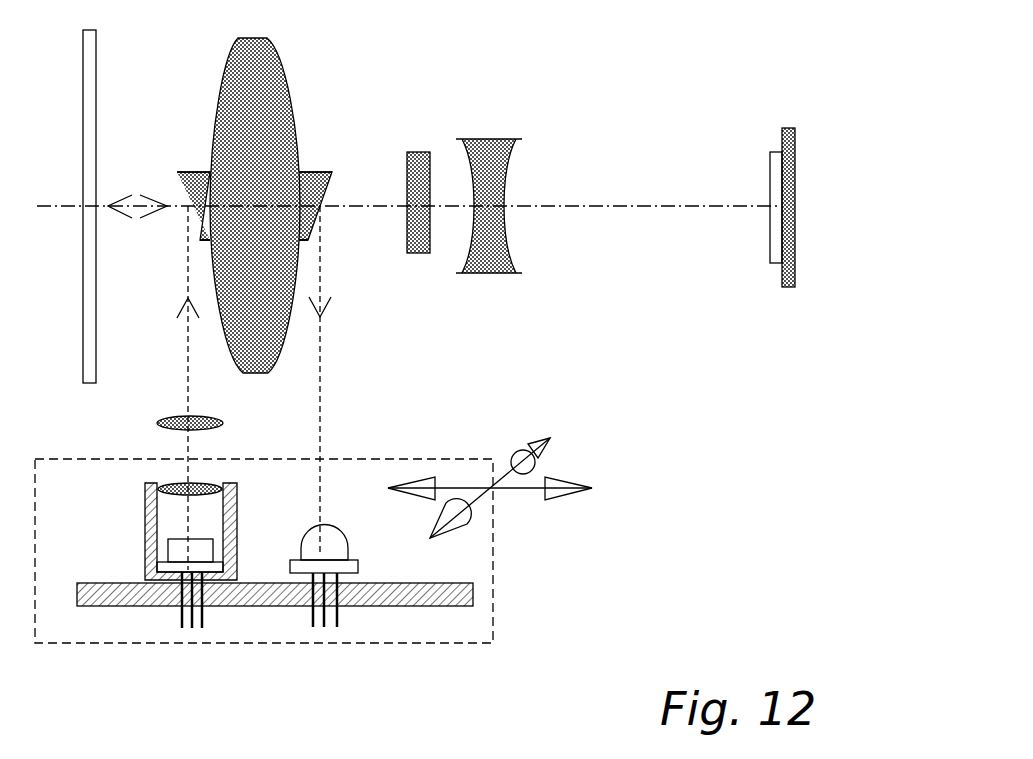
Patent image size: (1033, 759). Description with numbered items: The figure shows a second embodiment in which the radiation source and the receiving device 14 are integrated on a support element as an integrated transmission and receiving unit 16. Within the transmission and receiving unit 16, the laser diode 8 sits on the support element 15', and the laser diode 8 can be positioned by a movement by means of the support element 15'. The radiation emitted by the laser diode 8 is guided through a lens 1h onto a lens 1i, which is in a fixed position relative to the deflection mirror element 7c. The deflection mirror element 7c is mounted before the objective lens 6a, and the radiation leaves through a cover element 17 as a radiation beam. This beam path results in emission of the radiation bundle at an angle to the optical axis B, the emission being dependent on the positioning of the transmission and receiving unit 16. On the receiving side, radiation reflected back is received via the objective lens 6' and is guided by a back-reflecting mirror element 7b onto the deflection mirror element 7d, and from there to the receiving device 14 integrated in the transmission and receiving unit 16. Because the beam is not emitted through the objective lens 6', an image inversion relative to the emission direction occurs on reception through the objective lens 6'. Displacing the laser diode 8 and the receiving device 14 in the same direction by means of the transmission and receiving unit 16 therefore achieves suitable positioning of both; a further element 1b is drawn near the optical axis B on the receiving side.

The cover element 17 is at (95, 63).
The objective lens 6a is at (238, 137).
The deflection mirror element 7d is at (303, 197).
The deflection mirror element 7c is at (203, 222).
The back-reflecting mirror element 7b is at (428, 253).
The objective lens 6' is at (560, 165).
The optical axis B is at (407, 183).
The detector element 1b is at (783, 265).
The lens 1i is at (203, 423).
The lens 1h is at (175, 485).
The laser diode 8 is at (177, 549).
The receiving device 14 is at (332, 545).
The transmission and receiving unit 16 is at (493, 569).
The support element 15' is at (370, 615).